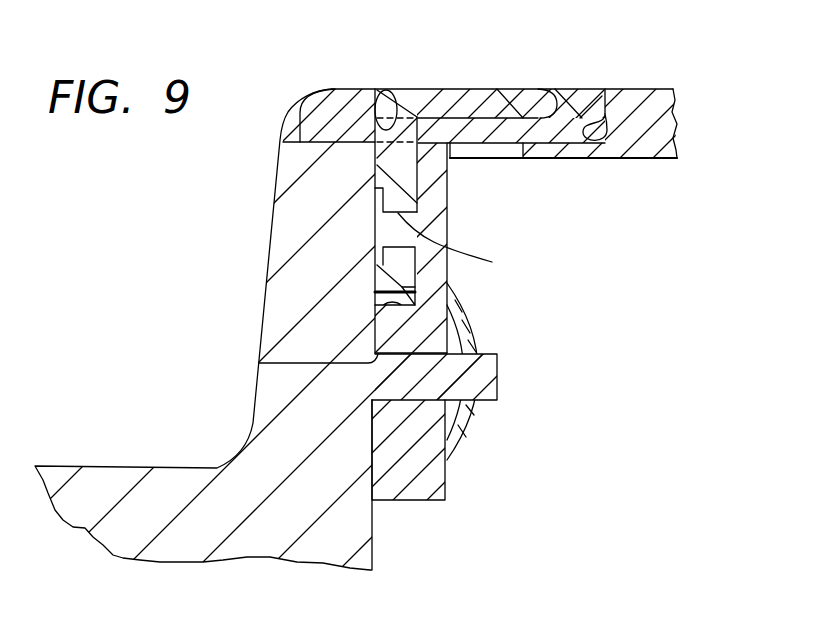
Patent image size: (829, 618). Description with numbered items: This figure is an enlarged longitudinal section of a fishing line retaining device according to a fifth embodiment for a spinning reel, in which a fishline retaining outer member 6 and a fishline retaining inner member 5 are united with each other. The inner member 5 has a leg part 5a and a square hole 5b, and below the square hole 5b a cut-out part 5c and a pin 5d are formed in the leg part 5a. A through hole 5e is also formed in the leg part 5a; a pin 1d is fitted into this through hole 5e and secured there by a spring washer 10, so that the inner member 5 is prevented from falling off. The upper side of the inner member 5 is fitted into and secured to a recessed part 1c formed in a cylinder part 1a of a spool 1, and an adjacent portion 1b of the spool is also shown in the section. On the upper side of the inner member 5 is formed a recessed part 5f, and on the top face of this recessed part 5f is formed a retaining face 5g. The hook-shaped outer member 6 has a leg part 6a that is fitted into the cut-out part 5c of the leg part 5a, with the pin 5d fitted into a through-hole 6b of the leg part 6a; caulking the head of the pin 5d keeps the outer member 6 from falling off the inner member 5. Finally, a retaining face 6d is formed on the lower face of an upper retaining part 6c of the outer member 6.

The spool 1 is at (255, 318).
The cylinder part 1a is at (655, 97).
The groove 1b is at (519, 162).
The recessed part 1c is at (590, 143).
The pin 1d is at (494, 372).
The fishline retaining inner member 5 is at (595, 78).
The leg part 5a is at (446, 489).
The square hole 5b is at (393, 90).
The cut-out part 5c is at (375, 298).
The pin 5d is at (382, 222).
The through hole 5e is at (259, 363).
The recessed part 5f is at (568, 89).
The retaining face 5g is at (483, 118).
The fishline retaining outer member 6 is at (418, 76).
The leg part 6a is at (378, 277).
The through-hole 6b is at (462, 247).
The upper retaining part 6c is at (525, 98).
The retaining face 6d is at (478, 143).
The spring washer 10 is at (471, 322).